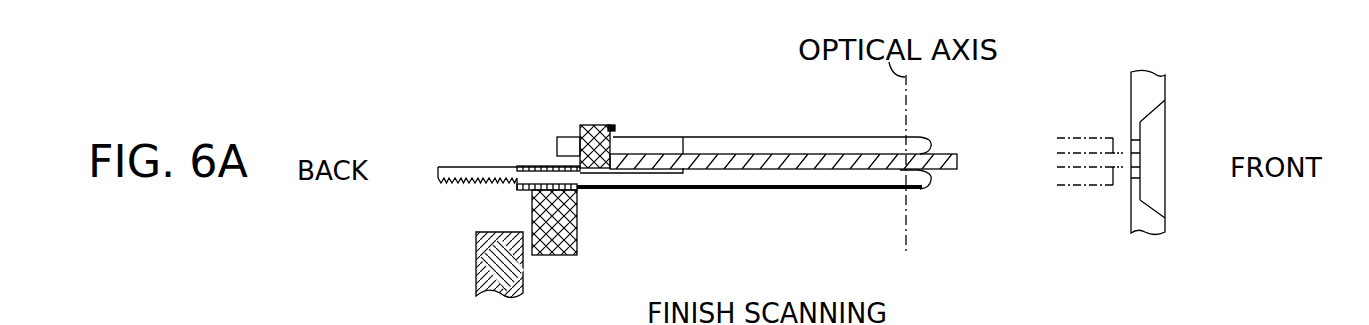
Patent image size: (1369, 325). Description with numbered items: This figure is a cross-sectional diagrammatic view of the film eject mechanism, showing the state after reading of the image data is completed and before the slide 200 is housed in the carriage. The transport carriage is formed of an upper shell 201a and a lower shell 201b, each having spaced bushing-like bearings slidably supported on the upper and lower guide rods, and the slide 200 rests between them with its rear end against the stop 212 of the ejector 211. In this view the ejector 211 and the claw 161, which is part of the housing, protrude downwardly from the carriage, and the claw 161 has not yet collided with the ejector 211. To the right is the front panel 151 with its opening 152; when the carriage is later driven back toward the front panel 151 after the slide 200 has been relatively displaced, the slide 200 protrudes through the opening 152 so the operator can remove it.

The slide 200 is at (665, 162).
The upper shell 201a is at (752, 145).
The lower shell 201b is at (828, 177).
The ejector 211 is at (575, 233).
The stop 212 is at (601, 124).
The claw 161 is at (506, 268).
The front panel 151 is at (1140, 215).
The opening 152 is at (1133, 177).